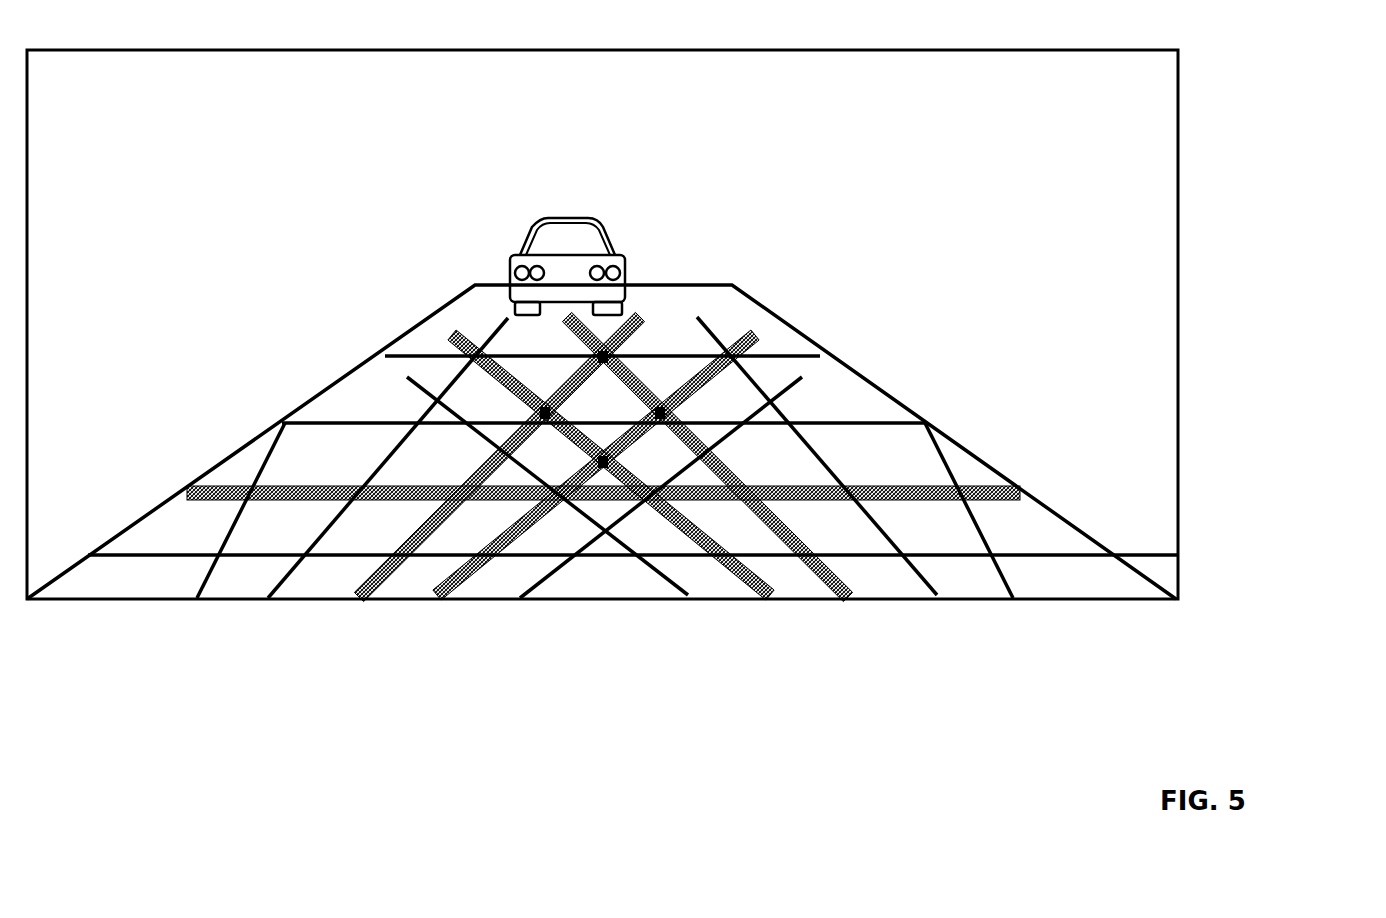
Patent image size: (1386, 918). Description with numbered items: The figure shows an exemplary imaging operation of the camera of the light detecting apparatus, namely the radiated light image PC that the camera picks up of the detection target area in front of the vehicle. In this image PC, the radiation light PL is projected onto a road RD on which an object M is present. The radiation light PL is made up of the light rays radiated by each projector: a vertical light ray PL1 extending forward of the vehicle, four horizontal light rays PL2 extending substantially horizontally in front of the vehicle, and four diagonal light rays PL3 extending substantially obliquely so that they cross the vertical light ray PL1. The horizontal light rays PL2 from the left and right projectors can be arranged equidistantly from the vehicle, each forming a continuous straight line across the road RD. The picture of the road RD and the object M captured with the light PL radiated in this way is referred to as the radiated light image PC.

The radiated light image PC is at (1190, 216).
The road RD is at (975, 470).
The object M is at (546, 220).
The radiation light PL is at (736, 320).
The vertical light ray PL1 is at (810, 546).
The horizontal light rays PL2 is at (998, 475).
The diagonal light rays PL3 is at (762, 576).